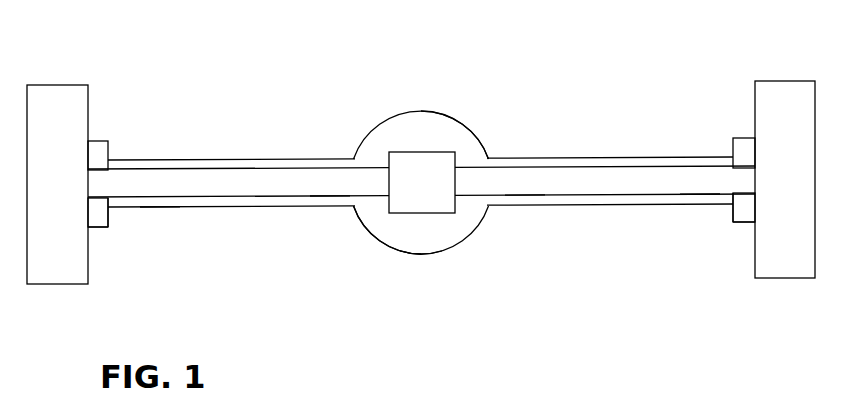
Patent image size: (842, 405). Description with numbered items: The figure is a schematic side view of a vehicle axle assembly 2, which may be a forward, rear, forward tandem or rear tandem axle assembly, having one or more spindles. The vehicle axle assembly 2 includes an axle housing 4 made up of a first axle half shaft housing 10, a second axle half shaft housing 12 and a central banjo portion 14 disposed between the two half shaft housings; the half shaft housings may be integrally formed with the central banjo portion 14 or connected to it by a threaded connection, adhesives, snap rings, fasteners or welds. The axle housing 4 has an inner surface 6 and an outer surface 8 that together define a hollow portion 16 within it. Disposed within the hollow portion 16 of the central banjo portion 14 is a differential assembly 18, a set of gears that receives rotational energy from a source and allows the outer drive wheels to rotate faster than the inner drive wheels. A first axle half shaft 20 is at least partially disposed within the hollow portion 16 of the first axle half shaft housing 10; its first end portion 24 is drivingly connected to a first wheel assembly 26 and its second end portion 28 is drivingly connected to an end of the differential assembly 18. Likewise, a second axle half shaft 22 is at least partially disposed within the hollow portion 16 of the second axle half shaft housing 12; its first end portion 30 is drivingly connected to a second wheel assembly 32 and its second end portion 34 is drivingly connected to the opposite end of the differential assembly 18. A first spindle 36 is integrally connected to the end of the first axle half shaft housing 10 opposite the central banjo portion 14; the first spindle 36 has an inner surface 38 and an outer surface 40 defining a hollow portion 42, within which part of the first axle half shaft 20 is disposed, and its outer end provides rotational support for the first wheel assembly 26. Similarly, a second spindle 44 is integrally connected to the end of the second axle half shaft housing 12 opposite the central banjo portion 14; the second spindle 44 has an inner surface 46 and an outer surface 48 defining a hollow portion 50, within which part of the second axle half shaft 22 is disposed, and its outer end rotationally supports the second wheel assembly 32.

The vehicle axle assembly 2 is at (614, 80).
The axle housing 4 is at (377, 108).
The inner surface 6 is at (464, 223).
The outer surface 8 is at (422, 253).
The first axle half shaft housing 10 is at (222, 159).
The second axle half shaft housing 12 is at (600, 157).
The central banjo portion 14 is at (463, 122).
The hollow portion 16 is at (396, 235).
The differential assembly 18 is at (422, 182).
The first axle half shaft 20 is at (253, 187).
The second axle half shaft 22 is at (607, 185).
The first end portion 24 is at (157, 198).
The first wheel assembly 26 is at (57, 184).
The second end portion 28 is at (330, 184).
The first end portion 30 is at (698, 184).
The second wheel assembly 32 is at (785, 179).
The second end portion 34 is at (527, 185).
The first spindle 36 is at (105, 141).
The inner surface 38 is at (97, 223).
The outer surface 40 is at (105, 228).
The hollow portion 42 is at (105, 215).
The second spindle 44 is at (735, 138).
The inner surface 46 is at (750, 218).
The outer surface 48 is at (738, 223).
The hollow portion 50 is at (735, 213).